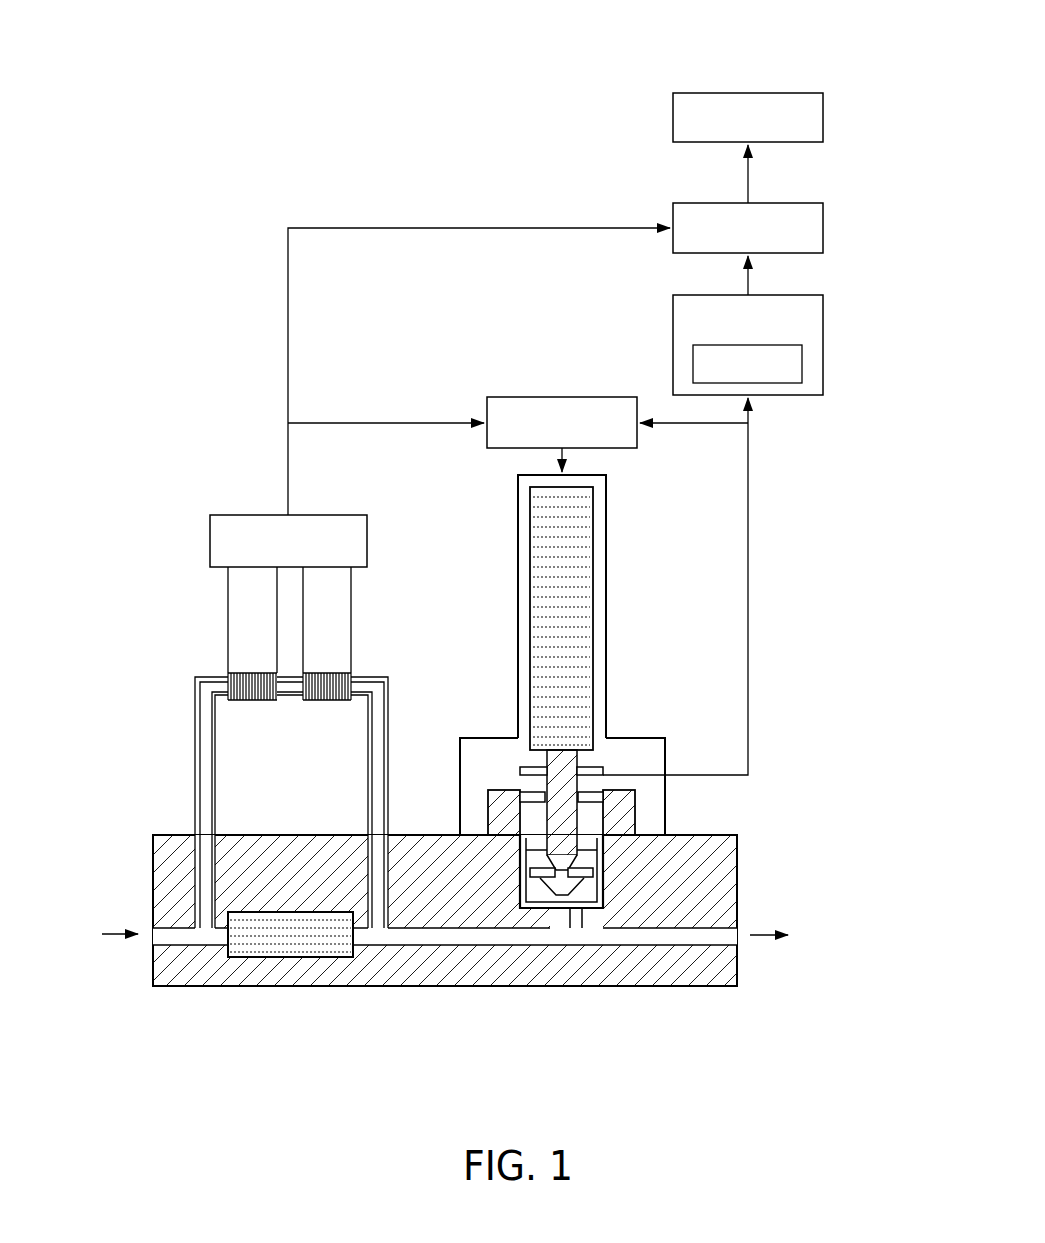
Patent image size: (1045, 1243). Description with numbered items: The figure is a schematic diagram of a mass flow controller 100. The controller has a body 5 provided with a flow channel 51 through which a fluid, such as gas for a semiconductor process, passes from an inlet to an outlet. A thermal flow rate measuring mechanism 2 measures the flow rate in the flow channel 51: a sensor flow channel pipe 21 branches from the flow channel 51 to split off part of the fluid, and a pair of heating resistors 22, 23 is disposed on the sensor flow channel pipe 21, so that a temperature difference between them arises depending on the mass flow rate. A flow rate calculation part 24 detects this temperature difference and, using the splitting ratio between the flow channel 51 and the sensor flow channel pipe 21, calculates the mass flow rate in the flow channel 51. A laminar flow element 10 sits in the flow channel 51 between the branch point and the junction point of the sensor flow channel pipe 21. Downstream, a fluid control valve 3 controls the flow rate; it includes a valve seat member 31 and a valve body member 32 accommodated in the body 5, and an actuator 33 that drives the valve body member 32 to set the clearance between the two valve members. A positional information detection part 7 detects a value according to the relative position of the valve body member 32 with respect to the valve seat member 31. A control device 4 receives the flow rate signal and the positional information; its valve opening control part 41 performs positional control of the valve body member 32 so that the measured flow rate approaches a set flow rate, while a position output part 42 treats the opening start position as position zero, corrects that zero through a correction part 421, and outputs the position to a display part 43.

The mass flow controller 100 is at (232, 71).
The flow rate measuring mechanism 2 is at (196, 525).
The sensor flow channel pipe 21 is at (195, 724).
The heating resistor 22 is at (257, 699).
The heating resistor 23 is at (313, 699).
The flow rate calculation part 24 is at (367, 541).
The laminar flow element 10 is at (289, 958).
The fluid control valve 3 is at (622, 556).
The valve seat member 31 is at (605, 860).
The valve body member 32 is at (605, 872).
The actuator 33 is at (593, 632).
The positional information detection part 7 is at (605, 775).
The control device 4 is at (556, 192).
The valve opening control part 41 is at (513, 396).
The position output part 42 is at (823, 320).
The correction part 421 is at (802, 362).
The display part 43 is at (823, 226).
The body 5 is at (445, 944).
The flow channel 51 is at (418, 935).